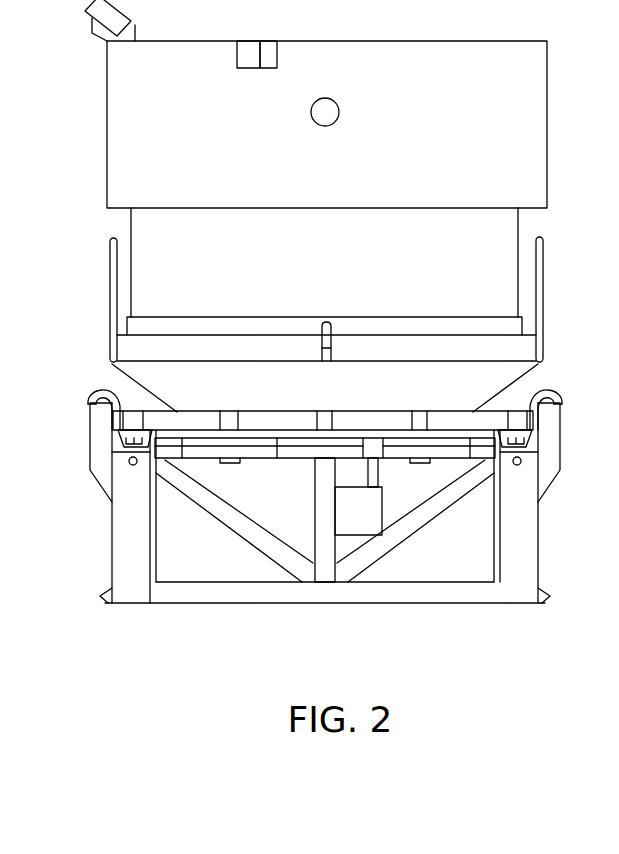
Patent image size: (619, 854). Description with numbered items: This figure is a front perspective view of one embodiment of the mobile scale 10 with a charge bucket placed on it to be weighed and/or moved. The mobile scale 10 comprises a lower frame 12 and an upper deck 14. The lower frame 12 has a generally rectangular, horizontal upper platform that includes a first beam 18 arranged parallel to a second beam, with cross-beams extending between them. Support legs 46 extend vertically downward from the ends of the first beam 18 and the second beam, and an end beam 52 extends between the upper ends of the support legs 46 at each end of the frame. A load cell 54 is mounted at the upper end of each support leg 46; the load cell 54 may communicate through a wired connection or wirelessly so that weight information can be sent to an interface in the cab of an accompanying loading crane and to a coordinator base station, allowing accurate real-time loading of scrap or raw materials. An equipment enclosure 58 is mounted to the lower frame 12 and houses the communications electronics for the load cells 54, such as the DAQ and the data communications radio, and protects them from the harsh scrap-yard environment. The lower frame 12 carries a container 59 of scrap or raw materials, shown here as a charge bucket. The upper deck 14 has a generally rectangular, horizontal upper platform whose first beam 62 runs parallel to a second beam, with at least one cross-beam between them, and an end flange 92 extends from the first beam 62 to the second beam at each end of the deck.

The mobile scale 10 is at (572, 536).
The lower frame 12 is at (268, 597).
The upper deck 14 is at (545, 380).
The first beam 18 is at (195, 453).
The support legs 46 is at (530, 585).
The end beam 52 is at (98, 425).
The load cell 54 is at (530, 442).
The equipment enclosure 58 is at (367, 500).
The container 59 is at (107, 129).
The first beam 62 is at (155, 417).
The end flange 92 is at (547, 394).